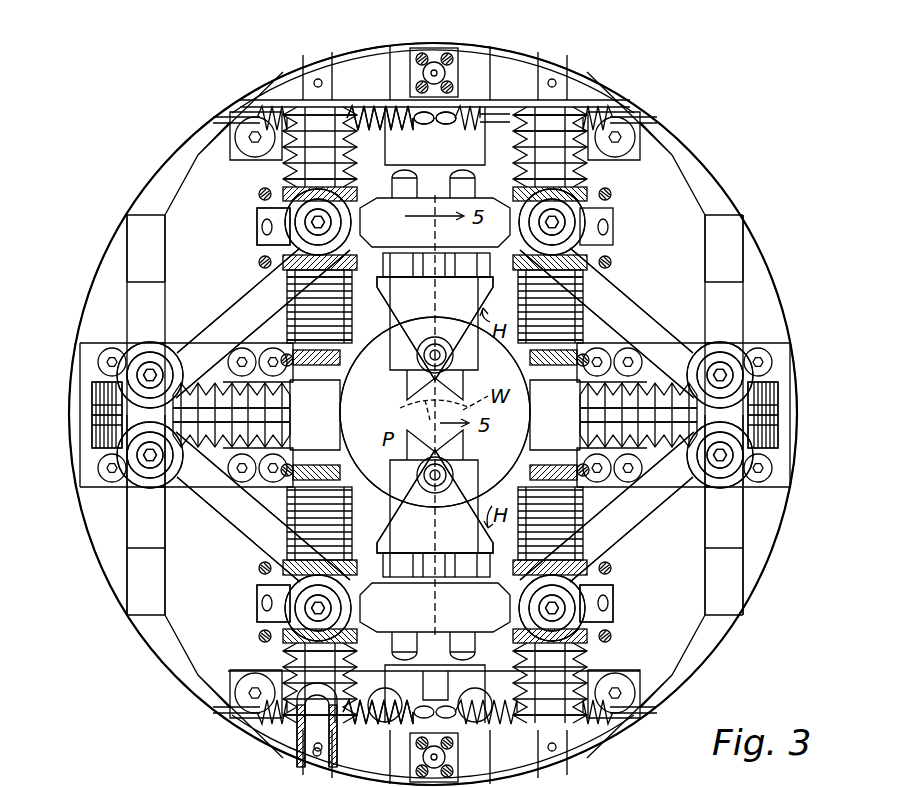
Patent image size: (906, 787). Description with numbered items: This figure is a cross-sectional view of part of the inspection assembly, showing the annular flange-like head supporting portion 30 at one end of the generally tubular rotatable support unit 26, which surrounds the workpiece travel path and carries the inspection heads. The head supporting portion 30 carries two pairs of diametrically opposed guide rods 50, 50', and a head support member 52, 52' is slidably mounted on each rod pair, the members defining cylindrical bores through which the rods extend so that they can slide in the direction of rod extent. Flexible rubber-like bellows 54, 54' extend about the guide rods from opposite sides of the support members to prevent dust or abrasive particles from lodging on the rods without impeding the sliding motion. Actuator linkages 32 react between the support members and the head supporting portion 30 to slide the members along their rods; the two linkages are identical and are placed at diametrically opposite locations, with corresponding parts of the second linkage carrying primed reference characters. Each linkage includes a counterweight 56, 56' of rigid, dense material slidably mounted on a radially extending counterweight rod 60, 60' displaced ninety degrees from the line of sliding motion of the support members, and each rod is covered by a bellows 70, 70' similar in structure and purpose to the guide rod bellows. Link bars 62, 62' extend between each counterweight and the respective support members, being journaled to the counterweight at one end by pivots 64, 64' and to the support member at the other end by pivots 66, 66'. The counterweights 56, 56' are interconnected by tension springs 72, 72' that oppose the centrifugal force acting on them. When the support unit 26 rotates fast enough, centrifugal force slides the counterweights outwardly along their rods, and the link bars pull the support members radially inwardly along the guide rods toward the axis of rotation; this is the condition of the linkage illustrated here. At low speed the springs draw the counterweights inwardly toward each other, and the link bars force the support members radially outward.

The rotatable support unit 26 is at (360, 452).
The head supporting portion 30 is at (718, 161).
The actuator linkage 32 is at (230, 330).
The guide rod 50 is at (424, 173).
The guide rod 50' is at (430, 592).
The head support member 52 is at (425, 320).
The head support member 52' is at (423, 515).
The bellows 54 is at (434, 227).
The bellows 54' is at (434, 675).
The counterweight 56 is at (104, 515).
The counterweight 56' is at (773, 515).
The counterweight rod 60 is at (72, 410).
The counterweight rod 60' is at (805, 428).
The link bar 62 is at (435, 320).
The link bar 62' is at (435, 507).
The pivot 64 is at (432, 352).
The pivot 64' is at (442, 472).
The pivot 66 is at (433, 222).
The pivot 66' is at (436, 608).
The bellows 70 is at (156, 472).
The bellows 70' is at (719, 465).
The tension spring 72 is at (440, 70).
The tension spring 72' is at (355, 728).